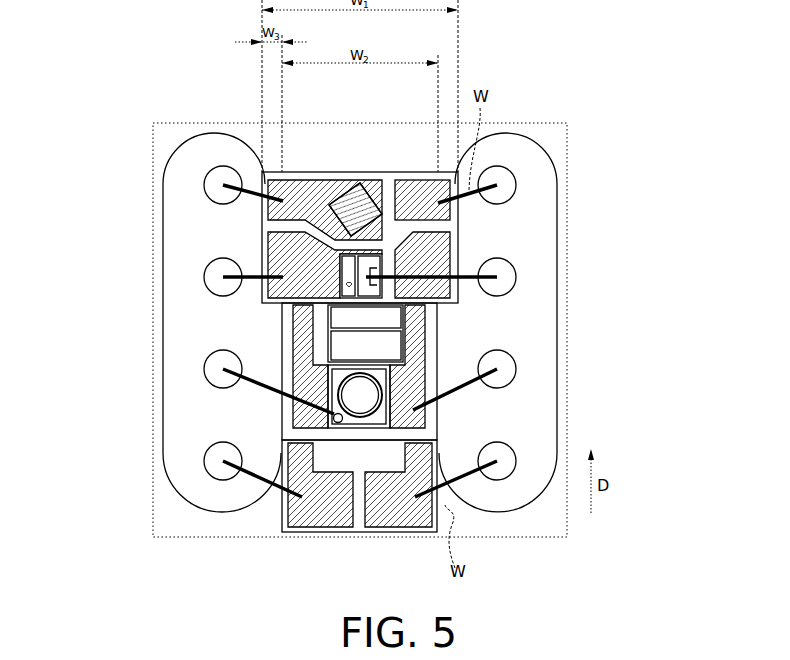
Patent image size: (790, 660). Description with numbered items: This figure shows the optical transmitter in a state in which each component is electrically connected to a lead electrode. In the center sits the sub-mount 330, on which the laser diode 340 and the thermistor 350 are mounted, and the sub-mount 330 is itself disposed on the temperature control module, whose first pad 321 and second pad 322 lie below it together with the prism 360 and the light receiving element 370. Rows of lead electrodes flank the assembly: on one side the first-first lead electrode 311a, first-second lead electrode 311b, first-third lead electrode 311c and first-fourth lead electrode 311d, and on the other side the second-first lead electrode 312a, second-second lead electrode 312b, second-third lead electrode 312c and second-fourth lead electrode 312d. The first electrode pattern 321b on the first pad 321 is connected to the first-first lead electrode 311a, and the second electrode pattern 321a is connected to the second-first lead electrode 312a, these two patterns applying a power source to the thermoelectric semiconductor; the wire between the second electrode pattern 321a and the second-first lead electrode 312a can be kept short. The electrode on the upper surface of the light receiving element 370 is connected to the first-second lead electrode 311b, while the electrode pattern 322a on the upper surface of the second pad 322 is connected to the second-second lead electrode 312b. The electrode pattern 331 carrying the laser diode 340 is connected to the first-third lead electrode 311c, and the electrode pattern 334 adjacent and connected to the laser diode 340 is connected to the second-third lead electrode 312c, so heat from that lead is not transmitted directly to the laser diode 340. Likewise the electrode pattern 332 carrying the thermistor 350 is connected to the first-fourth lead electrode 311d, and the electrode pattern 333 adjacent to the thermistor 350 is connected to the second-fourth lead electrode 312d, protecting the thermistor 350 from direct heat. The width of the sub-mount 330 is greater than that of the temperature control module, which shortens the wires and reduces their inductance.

The first-first lead electrode 311a is at (205, 460).
The first-second lead electrode 311b is at (205, 367).
The first-third lead electrode 311c is at (205, 278).
The first-fourth lead electrode 311d is at (205, 183).
The second-first lead electrode 312a is at (512, 458).
The second-second lead electrode 312b is at (512, 368).
The second-third lead electrode 312c is at (516, 278).
The second-fourth lead electrode 312d is at (516, 182).
The first pad 321 is at (283, 524).
The second electrode pattern 321a is at (401, 532).
The first electrode pattern 321b is at (315, 532).
The second pad 322 is at (287, 430).
The electrode pattern 322a is at (332, 413).
The sub-mount 330 is at (460, 210).
The electrode pattern 331 is at (278, 243).
The electrode pattern 332 is at (275, 205).
The electrode pattern 333 is at (418, 190).
The electrode pattern 334 is at (445, 240).
The laser diode 340 is at (345, 200).
The thermistor 350 is at (352, 256).
The prism 360 is at (400, 327).
The light receiving element 370 is at (357, 430).